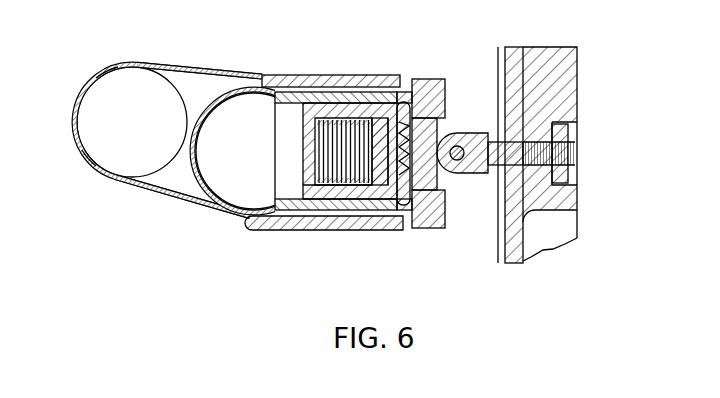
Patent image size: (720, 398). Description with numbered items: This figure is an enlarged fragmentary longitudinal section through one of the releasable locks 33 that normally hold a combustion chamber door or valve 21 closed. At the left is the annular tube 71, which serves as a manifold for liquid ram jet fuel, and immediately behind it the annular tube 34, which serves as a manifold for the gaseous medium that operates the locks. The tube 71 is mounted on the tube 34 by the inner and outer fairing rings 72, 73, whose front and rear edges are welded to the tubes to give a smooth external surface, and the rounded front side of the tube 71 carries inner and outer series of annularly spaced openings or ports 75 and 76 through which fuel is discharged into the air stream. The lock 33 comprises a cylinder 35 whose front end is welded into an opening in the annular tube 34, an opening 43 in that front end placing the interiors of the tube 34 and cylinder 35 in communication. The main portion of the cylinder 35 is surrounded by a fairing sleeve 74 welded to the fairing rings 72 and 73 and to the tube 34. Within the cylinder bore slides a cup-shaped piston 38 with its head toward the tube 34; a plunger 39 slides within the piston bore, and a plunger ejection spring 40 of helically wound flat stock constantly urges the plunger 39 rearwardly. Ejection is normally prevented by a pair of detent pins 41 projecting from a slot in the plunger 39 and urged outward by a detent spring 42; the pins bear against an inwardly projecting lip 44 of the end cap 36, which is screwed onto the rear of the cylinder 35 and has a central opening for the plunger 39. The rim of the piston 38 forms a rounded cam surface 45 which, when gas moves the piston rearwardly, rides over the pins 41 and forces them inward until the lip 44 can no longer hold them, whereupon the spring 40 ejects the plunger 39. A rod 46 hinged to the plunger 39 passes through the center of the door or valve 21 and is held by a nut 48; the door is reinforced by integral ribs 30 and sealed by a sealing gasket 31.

The door or valve 21 is at (518, 246).
The reinforcing ribs 30 is at (566, 72).
The sealing gasket 31 is at (498, 240).
The releasable lock 33 is at (453, 120).
The annular tube 34 is at (202, 103).
The cylinder 35 is at (347, 92).
The end cap 36 is at (445, 84).
The cup-shaped piston 38 is at (303, 122).
The plunger 39 is at (397, 172).
The plunger ejection spring 40 is at (337, 174).
The detent pins 41 is at (401, 102).
The detent spring 42 is at (443, 141).
The opening 43 is at (289, 198).
The lip 44 is at (430, 112).
The cam surface 45 is at (392, 112).
The rod 46 is at (492, 172).
The nut 48 is at (572, 132).
The annular tube 71 is at (75, 121).
The inner fairing ring 72 is at (190, 70).
The outer fairing ring 73 is at (163, 199).
The fairing sleeve 74 is at (298, 77).
The inner series of openings or ports 75 is at (100, 73).
The outer series of openings or ports 76 is at (84, 162).